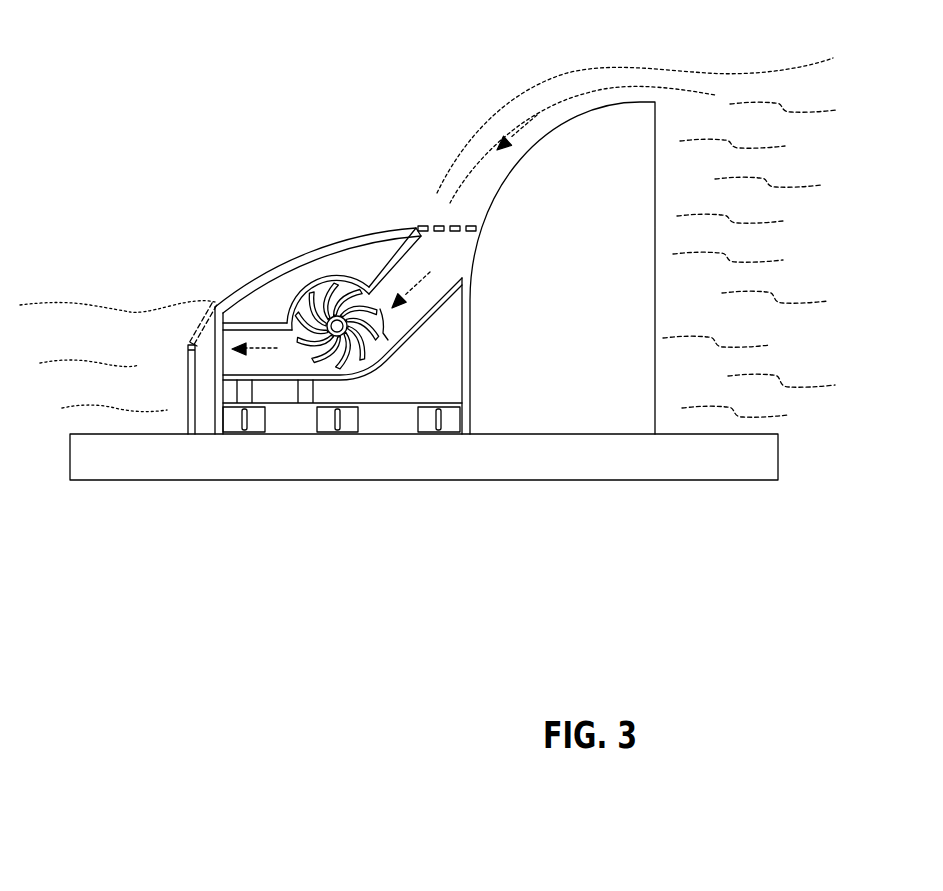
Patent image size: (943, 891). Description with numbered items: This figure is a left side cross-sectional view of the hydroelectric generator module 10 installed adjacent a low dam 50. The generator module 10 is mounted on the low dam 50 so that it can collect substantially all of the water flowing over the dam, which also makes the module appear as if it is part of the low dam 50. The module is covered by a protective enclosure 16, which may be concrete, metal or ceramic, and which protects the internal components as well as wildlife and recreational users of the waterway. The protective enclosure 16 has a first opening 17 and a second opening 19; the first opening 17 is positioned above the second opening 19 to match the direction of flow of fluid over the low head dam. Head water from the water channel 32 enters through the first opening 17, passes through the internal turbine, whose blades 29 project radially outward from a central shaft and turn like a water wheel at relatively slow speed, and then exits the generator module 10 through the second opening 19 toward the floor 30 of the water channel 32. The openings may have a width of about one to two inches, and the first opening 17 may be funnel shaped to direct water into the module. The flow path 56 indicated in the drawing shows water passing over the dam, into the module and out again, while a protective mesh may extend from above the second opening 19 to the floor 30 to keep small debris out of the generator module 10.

The generator module 10 is at (275, 232).
The protective enclosure 16 is at (345, 237).
The first opening 17 is at (432, 247).
The second opening 19 is at (197, 307).
The blades 29 is at (380, 327).
The floor 30 is at (137, 437).
The water channel 32 is at (72, 330).
The low dam 50 is at (605, 153).
The airflow 56 is at (453, 223).